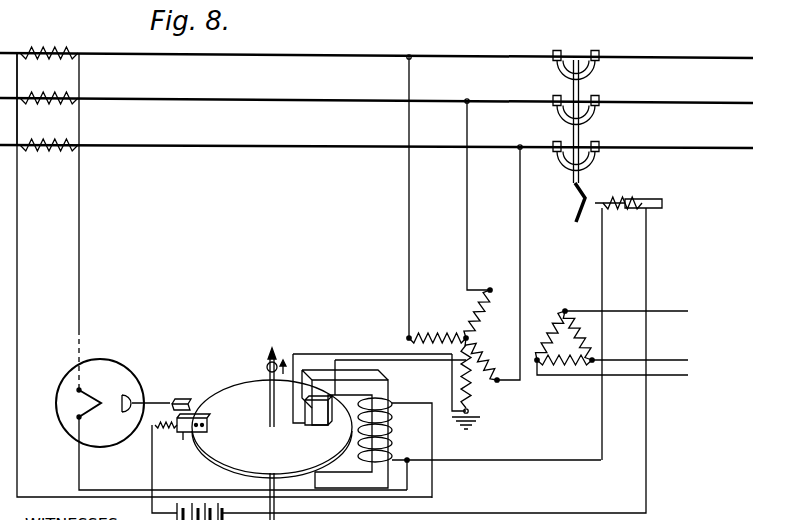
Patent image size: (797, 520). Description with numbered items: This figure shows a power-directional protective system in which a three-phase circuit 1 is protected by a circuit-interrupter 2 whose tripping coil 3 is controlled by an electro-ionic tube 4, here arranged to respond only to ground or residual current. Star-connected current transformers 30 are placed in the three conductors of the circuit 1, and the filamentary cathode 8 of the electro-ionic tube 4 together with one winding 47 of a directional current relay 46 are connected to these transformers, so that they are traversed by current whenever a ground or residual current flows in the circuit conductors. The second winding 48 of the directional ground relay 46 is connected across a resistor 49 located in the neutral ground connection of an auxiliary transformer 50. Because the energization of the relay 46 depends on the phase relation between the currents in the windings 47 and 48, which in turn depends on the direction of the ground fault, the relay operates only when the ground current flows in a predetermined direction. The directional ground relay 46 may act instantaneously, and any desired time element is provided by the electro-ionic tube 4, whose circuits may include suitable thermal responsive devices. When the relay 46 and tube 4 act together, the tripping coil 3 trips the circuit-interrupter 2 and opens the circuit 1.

The three-phase circuit 1 is at (250, 55).
The star-connected current transformers 30 is at (86, 121).
The circuit-interrupter 2 is at (591, 160).
The tripping coil 3 is at (630, 208).
The electro-ionic tube 4 is at (112, 378).
The filamentary cathode 8 is at (90, 398).
The directional current relay 46 is at (232, 447).
The winding 47 is at (393, 433).
The second winding 48 is at (320, 396).
The resistor 49 is at (477, 393).
The auxiliary transformer 50 is at (563, 291).